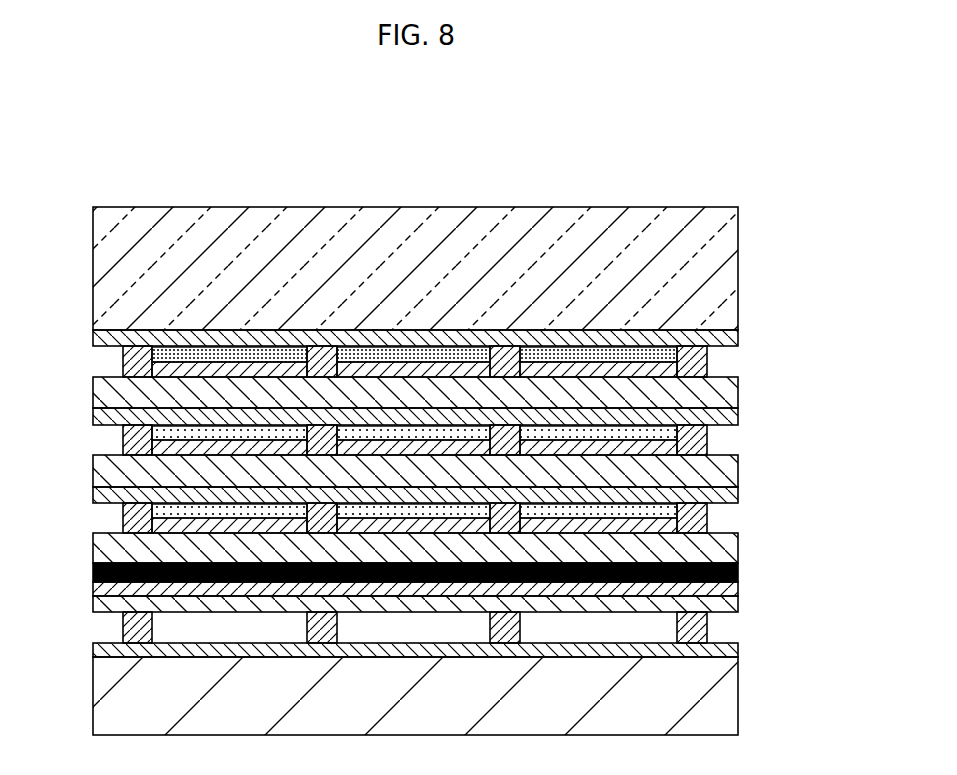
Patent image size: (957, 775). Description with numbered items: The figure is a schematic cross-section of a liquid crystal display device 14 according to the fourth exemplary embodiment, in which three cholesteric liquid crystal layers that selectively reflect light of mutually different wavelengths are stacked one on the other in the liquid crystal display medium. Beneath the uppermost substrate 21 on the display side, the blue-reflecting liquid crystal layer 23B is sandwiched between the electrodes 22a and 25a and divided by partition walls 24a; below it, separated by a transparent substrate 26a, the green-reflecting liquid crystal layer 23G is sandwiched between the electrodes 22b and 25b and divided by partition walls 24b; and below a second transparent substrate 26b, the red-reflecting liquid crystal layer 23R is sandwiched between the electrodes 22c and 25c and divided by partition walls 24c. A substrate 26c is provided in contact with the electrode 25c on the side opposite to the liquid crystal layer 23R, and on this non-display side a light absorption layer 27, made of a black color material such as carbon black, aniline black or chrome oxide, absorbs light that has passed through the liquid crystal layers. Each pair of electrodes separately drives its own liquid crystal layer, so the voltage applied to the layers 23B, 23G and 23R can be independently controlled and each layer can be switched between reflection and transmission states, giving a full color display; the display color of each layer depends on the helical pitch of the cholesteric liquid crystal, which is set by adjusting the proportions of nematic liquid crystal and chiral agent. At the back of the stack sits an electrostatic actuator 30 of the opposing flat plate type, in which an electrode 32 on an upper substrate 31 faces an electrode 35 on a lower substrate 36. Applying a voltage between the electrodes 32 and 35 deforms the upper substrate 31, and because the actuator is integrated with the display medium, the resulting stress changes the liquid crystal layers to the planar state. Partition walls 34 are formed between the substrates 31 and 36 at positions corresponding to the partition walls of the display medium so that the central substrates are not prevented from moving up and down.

The liquid crystal display device 14 is at (708, 170).
The substrate 21 is at (734, 242).
The electrode 22a is at (738, 338).
The liquid crystal layer 23B is at (122, 350).
The partition wall 24a is at (122, 366).
The electrode 25a is at (672, 368).
The transparent substrate 26a is at (736, 391).
The electrode 22b is at (738, 418).
The liquid crystal layer 23G is at (122, 428).
The partition wall 24b is at (122, 445).
The electrode 25b is at (672, 446).
The transparent substrate 26b is at (736, 472).
The electrode 22c is at (738, 496).
The liquid crystal layer 23R is at (122, 506).
The partition wall 24c is at (122, 523).
The electrode 25c is at (672, 525).
The substrate 26c is at (736, 552).
The light absorption layer 27 is at (738, 572).
The electrostatic actuator 30 is at (82, 583).
The substrate 31 is at (736, 605).
The electrode 32 is at (736, 590).
The partition wall 34 is at (710, 622).
The electrode 35 is at (734, 650).
The substrate 36 is at (734, 705).